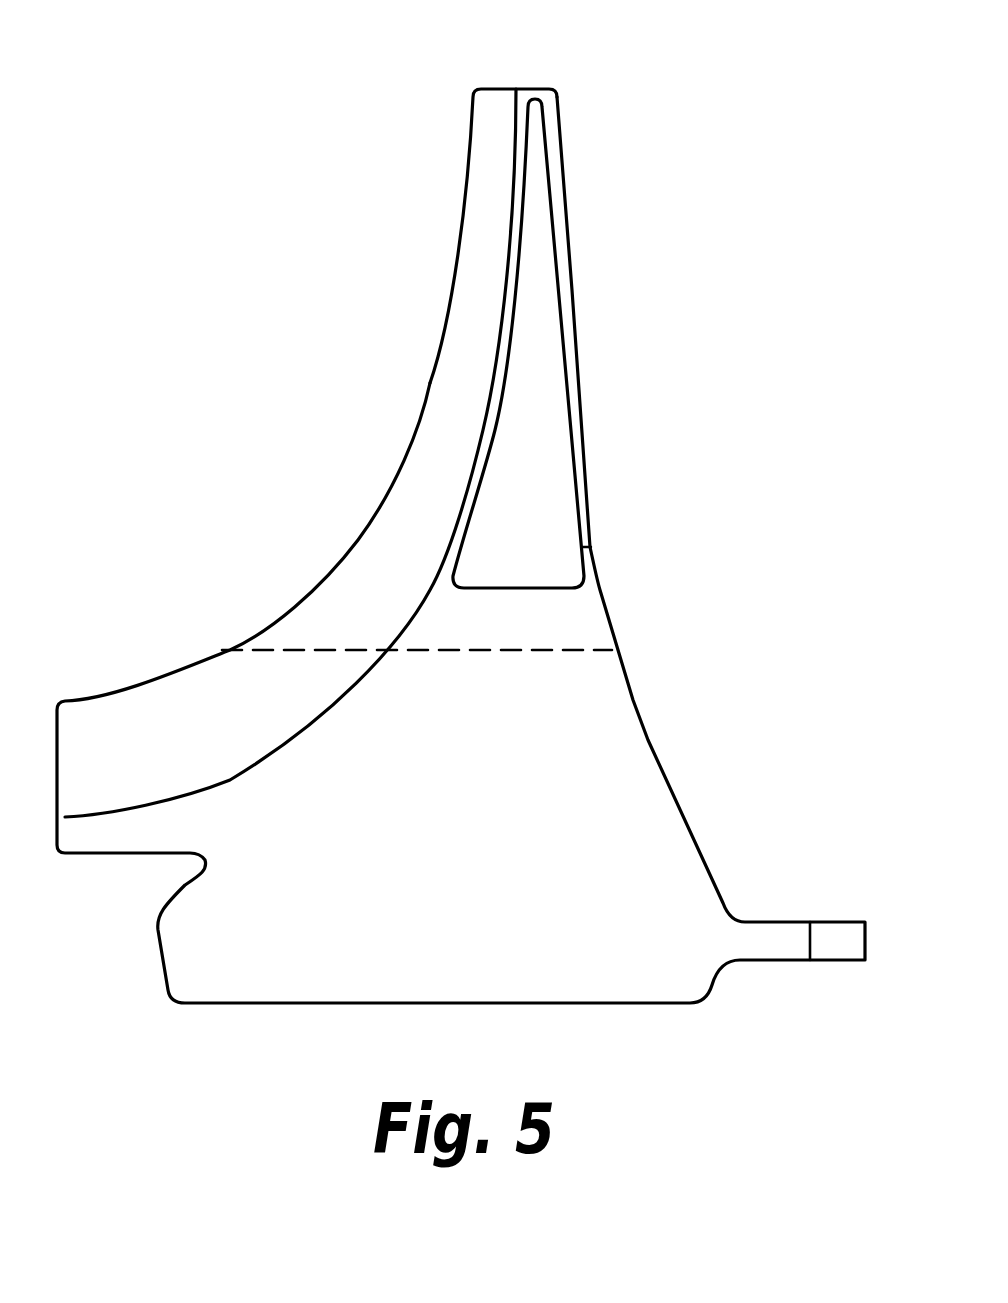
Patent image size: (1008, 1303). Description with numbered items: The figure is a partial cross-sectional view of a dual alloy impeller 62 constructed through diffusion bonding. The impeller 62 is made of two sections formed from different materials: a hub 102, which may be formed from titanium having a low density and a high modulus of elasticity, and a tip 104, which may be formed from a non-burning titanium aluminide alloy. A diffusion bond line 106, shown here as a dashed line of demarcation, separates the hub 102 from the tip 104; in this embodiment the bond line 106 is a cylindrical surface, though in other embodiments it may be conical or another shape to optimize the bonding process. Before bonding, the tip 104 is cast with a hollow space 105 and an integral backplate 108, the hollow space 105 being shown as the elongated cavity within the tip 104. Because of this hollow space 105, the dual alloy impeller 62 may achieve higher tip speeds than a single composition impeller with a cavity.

The impeller 62 is at (461, 512).
The hub 102 is at (585, 822).
The tip 104 is at (572, 295).
The hollow space 105 is at (522, 507).
The diffusion bond line 106 is at (562, 650).
The integral backplate 108 is at (571, 197).